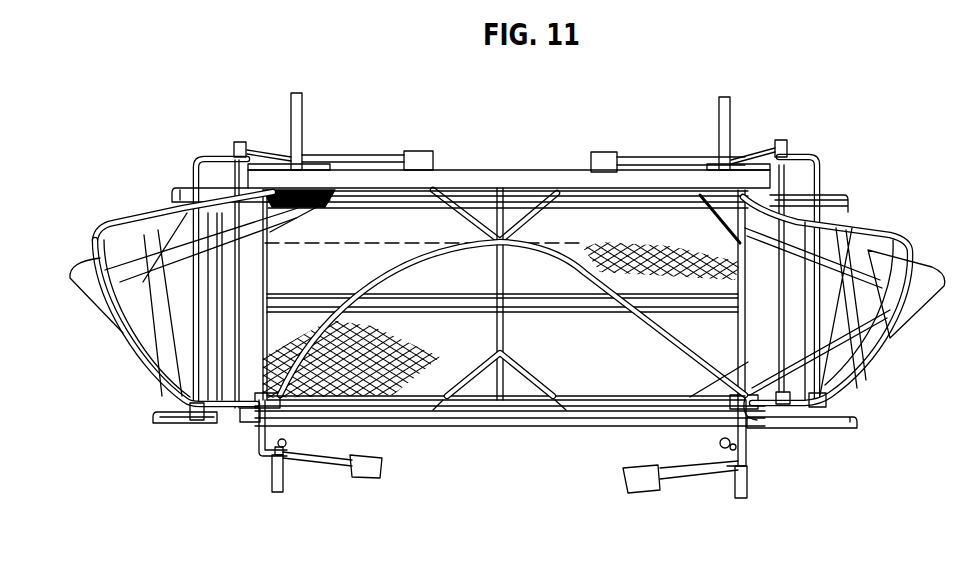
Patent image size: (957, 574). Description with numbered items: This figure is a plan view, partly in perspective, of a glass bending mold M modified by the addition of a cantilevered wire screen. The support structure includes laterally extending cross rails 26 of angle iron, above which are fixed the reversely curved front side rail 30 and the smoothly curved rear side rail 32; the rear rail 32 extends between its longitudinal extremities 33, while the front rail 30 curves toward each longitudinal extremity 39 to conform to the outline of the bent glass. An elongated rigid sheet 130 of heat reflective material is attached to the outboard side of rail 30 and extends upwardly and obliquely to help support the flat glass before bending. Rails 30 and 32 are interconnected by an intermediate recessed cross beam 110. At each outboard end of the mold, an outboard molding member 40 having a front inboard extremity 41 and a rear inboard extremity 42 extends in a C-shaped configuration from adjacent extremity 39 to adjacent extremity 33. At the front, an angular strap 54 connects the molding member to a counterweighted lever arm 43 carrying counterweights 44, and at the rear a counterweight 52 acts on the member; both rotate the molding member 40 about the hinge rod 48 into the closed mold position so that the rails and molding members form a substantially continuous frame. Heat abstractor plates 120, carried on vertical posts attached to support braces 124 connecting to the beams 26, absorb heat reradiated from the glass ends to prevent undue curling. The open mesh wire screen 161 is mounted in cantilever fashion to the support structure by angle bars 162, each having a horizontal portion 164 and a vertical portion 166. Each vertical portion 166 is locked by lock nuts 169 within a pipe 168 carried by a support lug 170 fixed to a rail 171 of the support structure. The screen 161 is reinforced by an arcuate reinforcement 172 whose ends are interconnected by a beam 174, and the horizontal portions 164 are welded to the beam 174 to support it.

The glass bending mold M is at (126, 230).
The cross rails 26 is at (302, 104).
The front side rail 30 is at (492, 187).
The rigid sheet of heat reflective material 130 is at (552, 177).
The counterweighted lever arm 43 is at (358, 157).
The counterweights 44 is at (417, 152).
The angular strap 54 is at (816, 164).
The longitudinal extremity of front side rail 39 is at (807, 213).
The outboard molding members 40 is at (137, 348).
The front inboard extremities 41 is at (504, 306).
The support braces 124 is at (252, 240).
The hinge rod 48 is at (222, 293).
The heat abstractor plates 120 is at (90, 291).
The open mesh wire screen 161 is at (612, 243).
The intermediate recessed cross beam 110 is at (503, 329).
The arcuate reinforcement 172 is at (667, 329).
The beam 174 is at (628, 397).
The rear side rail 32 is at (531, 412).
The rail of the mold support structure 171 is at (484, 419).
The rear inboard extremities 42 is at (203, 380).
The longitudinal extremities of rear side rail 33 is at (800, 386).
The angle bars 162 is at (257, 437).
The pipe 168 is at (746, 455).
The horizontal portion 164 is at (747, 430).
The vertical portion 166 is at (720, 440).
The lock nuts 169 is at (286, 440).
The support lug 170 is at (290, 435).
The counterweight 52 is at (362, 470).